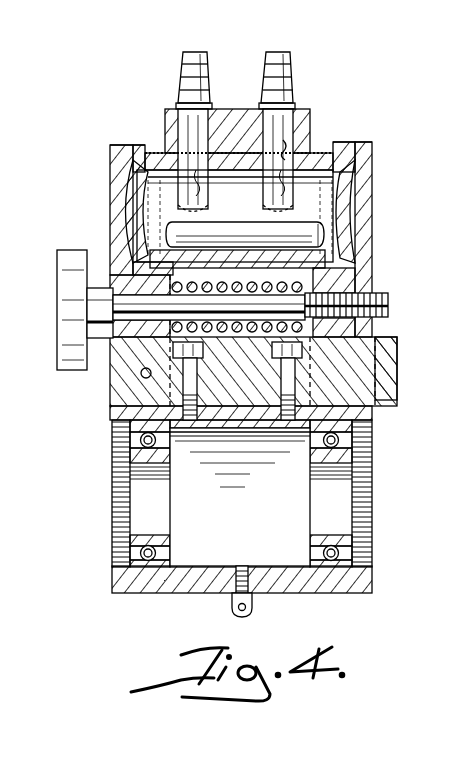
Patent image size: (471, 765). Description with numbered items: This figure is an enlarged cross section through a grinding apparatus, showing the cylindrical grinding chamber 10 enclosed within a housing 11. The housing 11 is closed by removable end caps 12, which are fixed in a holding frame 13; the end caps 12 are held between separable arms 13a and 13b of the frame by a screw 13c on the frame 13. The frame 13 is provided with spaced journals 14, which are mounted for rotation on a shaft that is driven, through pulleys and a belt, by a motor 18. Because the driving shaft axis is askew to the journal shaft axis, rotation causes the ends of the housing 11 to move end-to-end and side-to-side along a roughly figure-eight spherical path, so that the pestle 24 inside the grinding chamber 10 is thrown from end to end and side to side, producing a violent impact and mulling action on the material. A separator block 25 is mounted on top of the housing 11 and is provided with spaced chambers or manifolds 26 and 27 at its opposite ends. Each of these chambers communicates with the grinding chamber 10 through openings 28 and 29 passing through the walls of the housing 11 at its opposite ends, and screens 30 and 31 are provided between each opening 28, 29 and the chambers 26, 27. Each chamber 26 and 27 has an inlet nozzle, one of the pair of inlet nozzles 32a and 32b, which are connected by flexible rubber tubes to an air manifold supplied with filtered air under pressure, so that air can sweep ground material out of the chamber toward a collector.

The cylindrical grinding chamber 10 is at (245, 227).
The housing 11 is at (360, 278).
The removable end caps 12 is at (120, 213).
The holding frame 13 is at (200, 583).
The separable arm 13a is at (110, 157).
The separable arm 13b is at (372, 143).
The screw 13c is at (388, 300).
The spaced journals 14 is at (130, 447).
The motor 18 is at (358, 203).
The pestle 24 is at (308, 231).
The separator block 25 is at (232, 110).
The chamber or manifold 26 is at (289, 145).
The chamber or manifold 27 is at (193, 140).
The opening 28 is at (275, 190).
The opening 29 is at (192, 190).
The screen 30 is at (284, 150).
The screen 31 is at (190, 152).
The inlet nozzle 32a is at (294, 68).
The inlet nozzle 32b is at (182, 58).